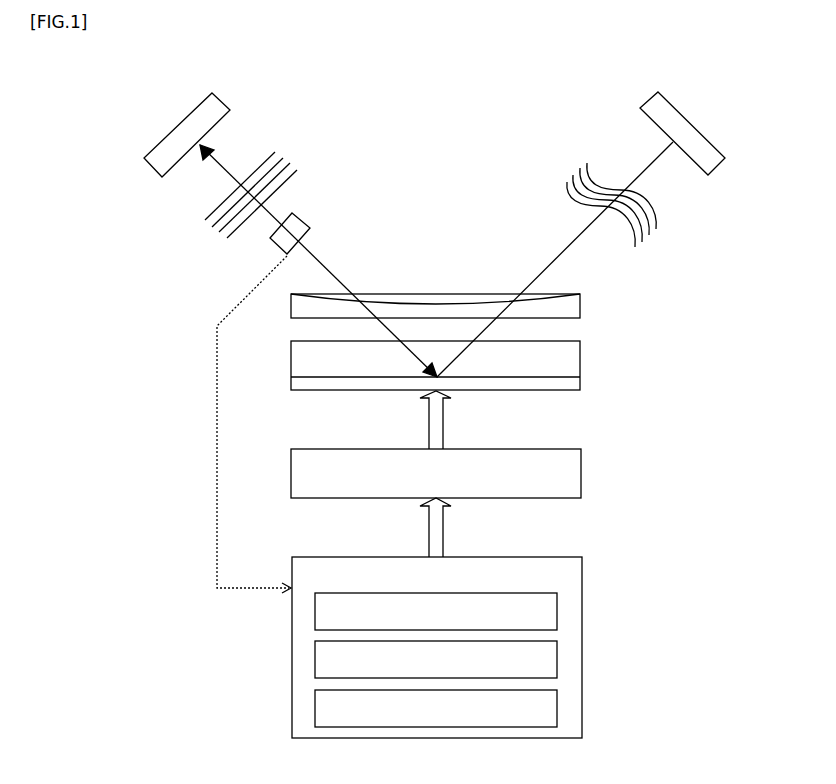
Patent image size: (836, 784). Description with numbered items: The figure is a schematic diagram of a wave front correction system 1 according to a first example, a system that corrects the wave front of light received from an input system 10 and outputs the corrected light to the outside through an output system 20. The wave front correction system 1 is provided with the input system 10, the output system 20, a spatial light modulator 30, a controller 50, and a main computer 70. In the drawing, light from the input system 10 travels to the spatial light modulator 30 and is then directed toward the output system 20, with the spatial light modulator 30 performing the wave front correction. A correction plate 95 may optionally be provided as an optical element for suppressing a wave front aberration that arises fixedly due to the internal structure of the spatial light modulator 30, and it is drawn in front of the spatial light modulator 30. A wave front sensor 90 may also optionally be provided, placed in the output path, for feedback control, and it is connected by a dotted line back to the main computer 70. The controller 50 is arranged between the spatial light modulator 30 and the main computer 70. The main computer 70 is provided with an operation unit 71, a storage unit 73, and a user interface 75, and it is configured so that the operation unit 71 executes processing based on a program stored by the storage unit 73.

The wave front correction system 1 is at (423, 111).
The input system 10 is at (689, 125).
The output system 20 is at (173, 130).
The spatial light modulator 30 is at (581, 370).
The controller 50 is at (581, 473).
The main computer 70 is at (581, 567).
The operation unit 71 is at (557, 610).
The storage unit 73 is at (557, 658).
The user interface 75 is at (557, 707).
The wave front sensor 90 is at (308, 226).
The correction plate 95 is at (581, 305).